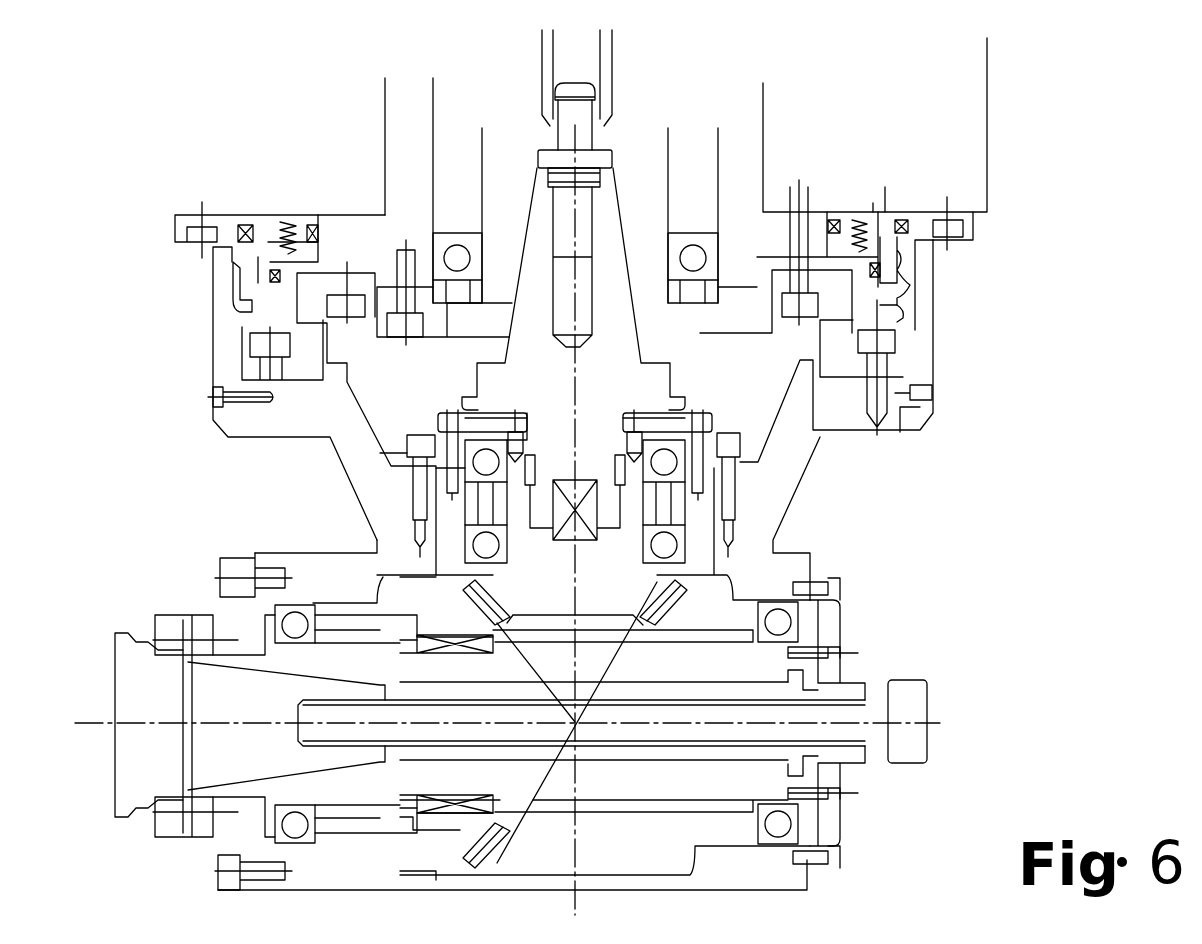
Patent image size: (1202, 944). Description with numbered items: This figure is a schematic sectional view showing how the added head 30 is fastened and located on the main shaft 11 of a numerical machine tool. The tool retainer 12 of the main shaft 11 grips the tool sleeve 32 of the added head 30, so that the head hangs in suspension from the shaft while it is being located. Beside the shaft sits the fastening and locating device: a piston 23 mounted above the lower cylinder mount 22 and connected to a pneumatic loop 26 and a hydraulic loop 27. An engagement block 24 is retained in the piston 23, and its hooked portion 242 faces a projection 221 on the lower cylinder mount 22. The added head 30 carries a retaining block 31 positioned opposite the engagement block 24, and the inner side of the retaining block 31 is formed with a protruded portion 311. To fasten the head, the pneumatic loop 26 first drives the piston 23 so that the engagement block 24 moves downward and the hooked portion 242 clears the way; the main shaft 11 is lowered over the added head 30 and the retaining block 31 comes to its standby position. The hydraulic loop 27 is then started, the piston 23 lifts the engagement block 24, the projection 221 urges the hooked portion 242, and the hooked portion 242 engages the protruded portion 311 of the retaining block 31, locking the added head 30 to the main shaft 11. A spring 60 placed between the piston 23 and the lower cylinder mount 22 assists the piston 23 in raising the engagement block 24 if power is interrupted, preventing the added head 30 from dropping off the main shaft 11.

The main shaft 11 is at (978, 143).
The tool retainer 12 is at (604, 68).
The lower cylinder mount 22 is at (863, 312).
The projection 221 is at (887, 310).
The piston 23 is at (848, 220).
The engagement block 24 is at (913, 283).
The hooked portion 242 is at (900, 313).
The pneumatic loop 26 is at (873, 203).
The hydraulic loop 27 is at (790, 257).
The added head 30 is at (762, 518).
The retaining block 31 is at (930, 362).
The protruded portion 311 is at (918, 278).
The tool sleeve 32 is at (575, 125).
The spring 60 is at (848, 240).